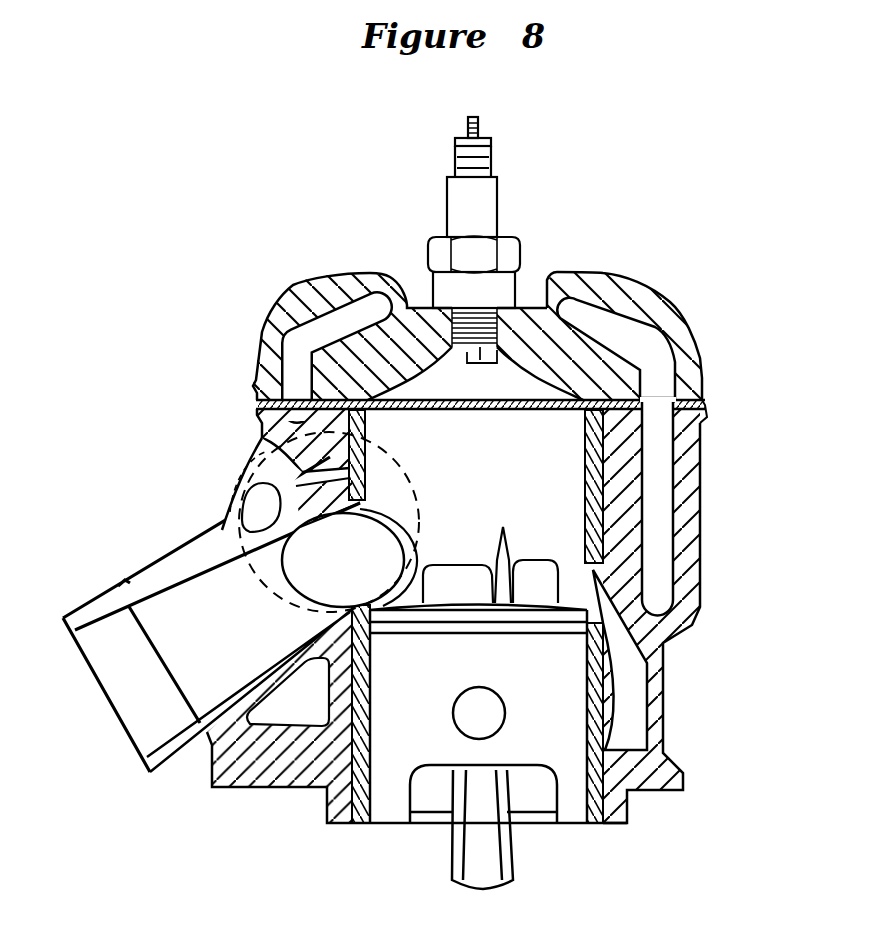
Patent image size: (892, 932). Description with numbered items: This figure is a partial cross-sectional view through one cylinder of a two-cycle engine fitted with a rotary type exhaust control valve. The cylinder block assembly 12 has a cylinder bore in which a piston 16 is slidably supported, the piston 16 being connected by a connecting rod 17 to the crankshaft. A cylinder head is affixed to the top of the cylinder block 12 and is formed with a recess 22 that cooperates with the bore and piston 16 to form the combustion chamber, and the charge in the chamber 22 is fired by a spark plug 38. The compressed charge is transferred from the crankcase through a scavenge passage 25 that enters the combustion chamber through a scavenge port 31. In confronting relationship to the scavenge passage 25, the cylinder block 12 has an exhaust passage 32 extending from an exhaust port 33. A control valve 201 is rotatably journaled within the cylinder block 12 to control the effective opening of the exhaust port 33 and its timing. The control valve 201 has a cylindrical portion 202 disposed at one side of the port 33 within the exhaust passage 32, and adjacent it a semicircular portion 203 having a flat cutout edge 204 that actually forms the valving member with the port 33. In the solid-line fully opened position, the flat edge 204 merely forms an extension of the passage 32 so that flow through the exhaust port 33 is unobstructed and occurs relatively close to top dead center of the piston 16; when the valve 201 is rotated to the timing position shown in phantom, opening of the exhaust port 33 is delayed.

The cylinder block assembly 12 is at (700, 540).
The piston 16 is at (454, 683).
The connecting rod 17 is at (513, 847).
The recess 22 is at (478, 396).
The scavenge passage 25 is at (627, 712).
The scavenge port 31 is at (503, 528).
The exhaust passage 32 is at (162, 600).
The exhaust port 33 is at (400, 543).
The spark plug 38 is at (500, 205).
The control valve 201 is at (303, 477).
The cylindrical portion 202 is at (277, 587).
The semicircular portion 203 is at (197, 548).
The flat cutout edge 204 is at (383, 510).